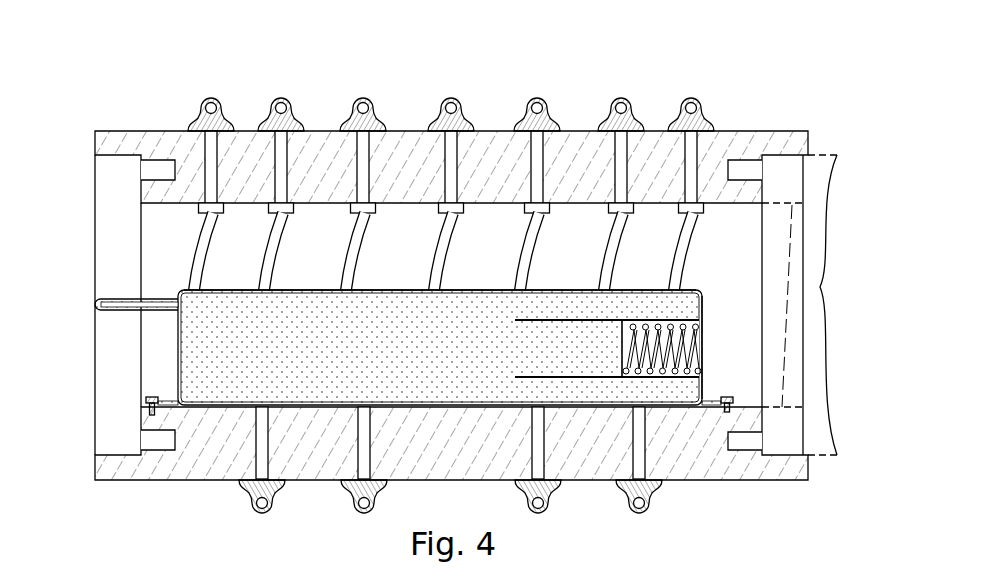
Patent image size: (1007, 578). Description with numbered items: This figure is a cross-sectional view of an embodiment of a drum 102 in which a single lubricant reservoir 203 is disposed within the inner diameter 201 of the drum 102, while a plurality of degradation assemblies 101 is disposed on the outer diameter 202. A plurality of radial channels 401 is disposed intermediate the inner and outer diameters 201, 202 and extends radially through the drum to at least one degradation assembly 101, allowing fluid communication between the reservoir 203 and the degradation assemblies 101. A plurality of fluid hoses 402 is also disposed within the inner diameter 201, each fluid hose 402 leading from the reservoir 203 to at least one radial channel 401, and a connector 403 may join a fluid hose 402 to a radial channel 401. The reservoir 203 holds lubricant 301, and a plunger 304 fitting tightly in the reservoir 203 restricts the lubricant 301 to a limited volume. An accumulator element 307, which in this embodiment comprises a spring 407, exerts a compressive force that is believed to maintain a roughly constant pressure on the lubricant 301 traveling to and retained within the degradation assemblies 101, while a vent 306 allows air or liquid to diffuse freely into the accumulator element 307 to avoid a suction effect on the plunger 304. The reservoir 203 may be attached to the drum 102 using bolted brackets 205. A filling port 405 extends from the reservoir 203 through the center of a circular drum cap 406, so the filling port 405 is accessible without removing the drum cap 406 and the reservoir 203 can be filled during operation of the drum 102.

The drum 102 is at (228, 62).
The degradation assemblies 101 is at (357, 113).
The radial channels 401 is at (537, 175).
The connector 403 is at (543, 208).
The lubricant reservoir 203 is at (553, 292).
The fluid hoses 402 is at (270, 236).
The accumulator element 307 is at (692, 318).
The vent 306 is at (706, 341).
The inner diameter 201 is at (783, 305).
The outer diameter 202 is at (820, 287).
The filling port 405 is at (110, 307).
The drum cap 406 is at (112, 440).
The lubricant 301 is at (318, 380).
The plunger 304 is at (620, 355).
The spring 407 is at (675, 368).
The bolted brackets 205 is at (716, 418).